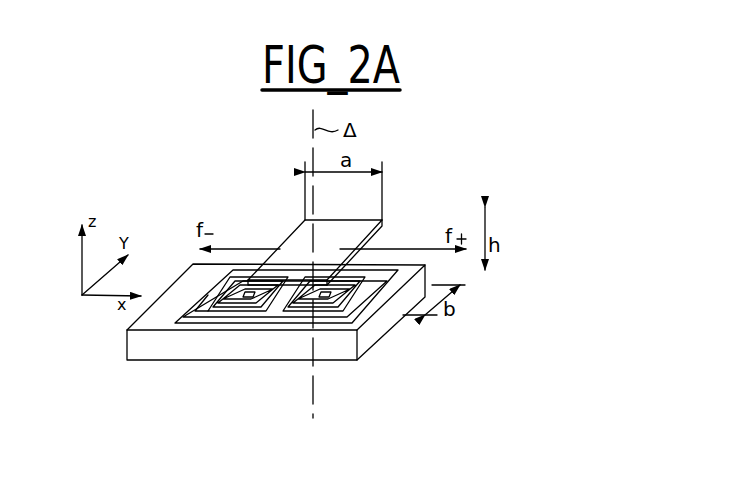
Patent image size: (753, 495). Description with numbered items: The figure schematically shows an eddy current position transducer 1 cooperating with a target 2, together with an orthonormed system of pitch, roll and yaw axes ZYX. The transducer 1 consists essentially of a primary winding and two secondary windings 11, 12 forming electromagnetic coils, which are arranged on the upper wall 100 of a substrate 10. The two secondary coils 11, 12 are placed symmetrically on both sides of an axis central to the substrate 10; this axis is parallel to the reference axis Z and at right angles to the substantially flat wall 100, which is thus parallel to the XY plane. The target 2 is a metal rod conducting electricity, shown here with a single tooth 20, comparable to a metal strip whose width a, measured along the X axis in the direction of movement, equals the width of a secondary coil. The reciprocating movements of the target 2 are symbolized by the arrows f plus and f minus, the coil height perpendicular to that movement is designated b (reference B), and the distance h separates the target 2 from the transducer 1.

The transducer 1 is at (122, 385).
The target 2 is at (251, 215).
The tooth 20 is at (290, 228).
The substrate 10 is at (278, 346).
The upper wall 100 is at (142, 320).
The secondary winding 11 is at (343, 288).
The secondary winding 12 is at (240, 296).
The coil region / magnetic field zone B is at (193, 323).